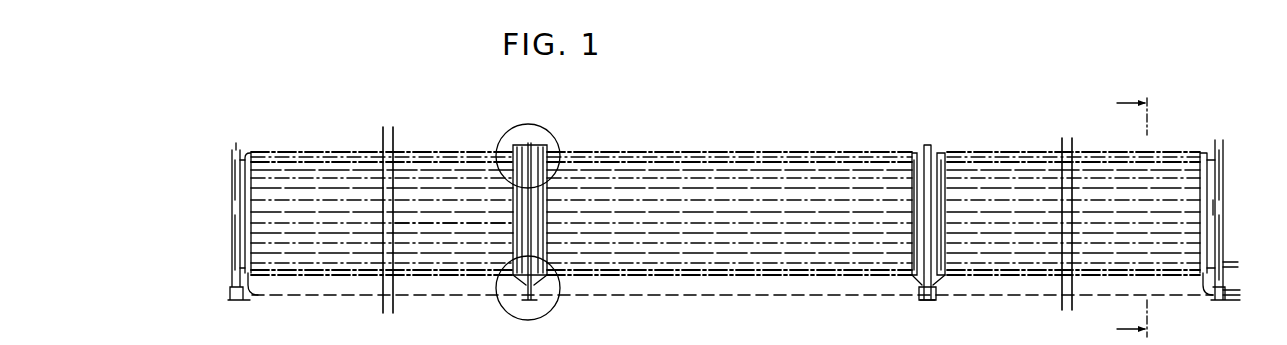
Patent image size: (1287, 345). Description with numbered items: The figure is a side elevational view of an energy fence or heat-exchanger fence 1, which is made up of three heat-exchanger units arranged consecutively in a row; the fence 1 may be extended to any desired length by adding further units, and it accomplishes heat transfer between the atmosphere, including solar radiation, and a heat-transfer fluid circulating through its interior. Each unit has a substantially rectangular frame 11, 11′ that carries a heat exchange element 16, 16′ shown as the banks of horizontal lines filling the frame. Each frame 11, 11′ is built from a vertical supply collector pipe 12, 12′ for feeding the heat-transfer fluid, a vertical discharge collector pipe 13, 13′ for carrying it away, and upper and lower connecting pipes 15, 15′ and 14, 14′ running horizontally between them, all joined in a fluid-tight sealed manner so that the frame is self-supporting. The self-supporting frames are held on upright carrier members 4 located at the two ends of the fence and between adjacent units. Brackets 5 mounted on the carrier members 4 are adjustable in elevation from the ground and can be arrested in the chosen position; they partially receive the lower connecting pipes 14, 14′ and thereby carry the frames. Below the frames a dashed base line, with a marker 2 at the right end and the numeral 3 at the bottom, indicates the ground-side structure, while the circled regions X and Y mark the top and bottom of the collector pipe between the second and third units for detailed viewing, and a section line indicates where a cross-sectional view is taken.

The energy fence 1 is at (200, 304).
The bracket 2 is at (1230, 262).
The base rail 3 is at (1118, 300).
The carrier member 4 is at (230, 200).
The bracket 5 is at (937, 282).
The frame 11 is at (1000, 152).
The frame 11′ is at (628, 152).
The supply collector pipe 12 is at (1226, 210).
The supply collector pipe 12′ is at (912, 240).
The discharge collector pipe 13 is at (953, 196).
The discharge collector pipe 13′ is at (554, 182).
The lower connecting pipe 14 is at (1046, 276).
The lower connecting pipe 14′ is at (738, 276).
The upper connecting pipe 15 is at (1044, 155).
The upper connecting pipe 15′ is at (708, 152).
The heat exchange element 16 is at (986, 224).
The heat exchange element 16′ is at (655, 226).
The detail circle X is at (548, 126).
The detail circle Y is at (560, 316).